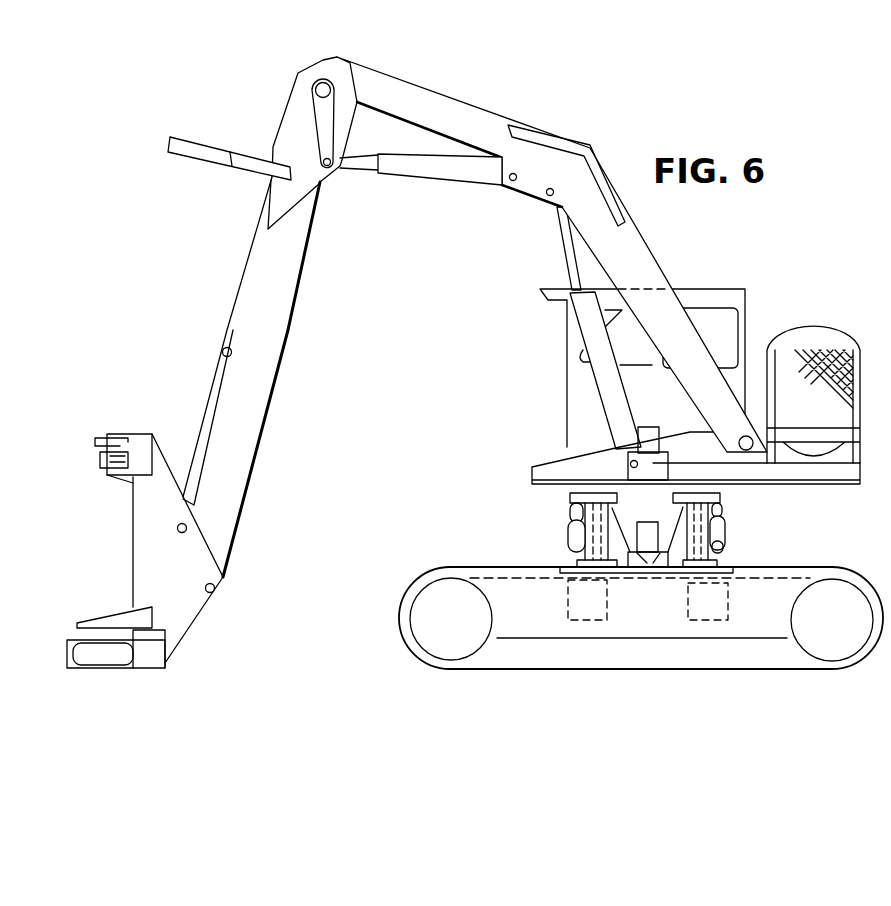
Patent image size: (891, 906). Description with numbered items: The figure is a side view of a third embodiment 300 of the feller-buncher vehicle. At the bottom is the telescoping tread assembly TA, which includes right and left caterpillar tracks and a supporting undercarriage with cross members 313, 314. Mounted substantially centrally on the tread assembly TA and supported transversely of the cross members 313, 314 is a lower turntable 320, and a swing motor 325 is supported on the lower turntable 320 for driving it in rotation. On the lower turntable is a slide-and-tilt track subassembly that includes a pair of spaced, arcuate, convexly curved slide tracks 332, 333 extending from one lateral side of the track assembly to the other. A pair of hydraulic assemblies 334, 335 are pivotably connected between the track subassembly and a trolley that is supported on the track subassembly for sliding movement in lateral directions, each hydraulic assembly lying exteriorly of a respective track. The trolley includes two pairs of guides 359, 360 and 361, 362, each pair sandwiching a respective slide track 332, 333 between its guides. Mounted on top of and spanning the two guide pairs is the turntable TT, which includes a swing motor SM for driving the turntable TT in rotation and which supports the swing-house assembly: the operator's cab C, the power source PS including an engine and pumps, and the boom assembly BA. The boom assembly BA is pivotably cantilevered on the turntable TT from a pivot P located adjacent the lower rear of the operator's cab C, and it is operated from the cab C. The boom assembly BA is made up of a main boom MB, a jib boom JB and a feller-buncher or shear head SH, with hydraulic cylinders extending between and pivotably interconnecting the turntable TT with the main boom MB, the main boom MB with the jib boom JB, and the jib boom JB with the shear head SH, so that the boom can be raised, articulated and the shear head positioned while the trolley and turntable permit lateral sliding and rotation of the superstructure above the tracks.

The third embodiment 300 is at (727, 52).
The boom assembly BA is at (271, 93).
The jib boom JB is at (276, 257).
The main boom MB is at (599, 152).
The operator's cab C is at (690, 287).
The power source PS is at (826, 341).
The pivot P is at (752, 438).
The guide 360 is at (668, 447).
The guide 359 is at (582, 497).
The turntable TT is at (576, 495).
The swing motor SM is at (646, 471).
The guide 361 is at (669, 500).
The swing motor 325 is at (583, 520).
The guide 362 is at (723, 508).
The hydraulic assembly 334 is at (560, 534).
The hydraulic assembly 335 is at (724, 530).
The lower turntable 320 is at (572, 577).
The slide track 333 is at (723, 547).
The cross member 313 is at (566, 611).
The slide track 332 is at (555, 535).
The cross member 314 is at (728, 601).
The telescoping tread assembly TA is at (637, 670).
The shear head SH is at (185, 612).